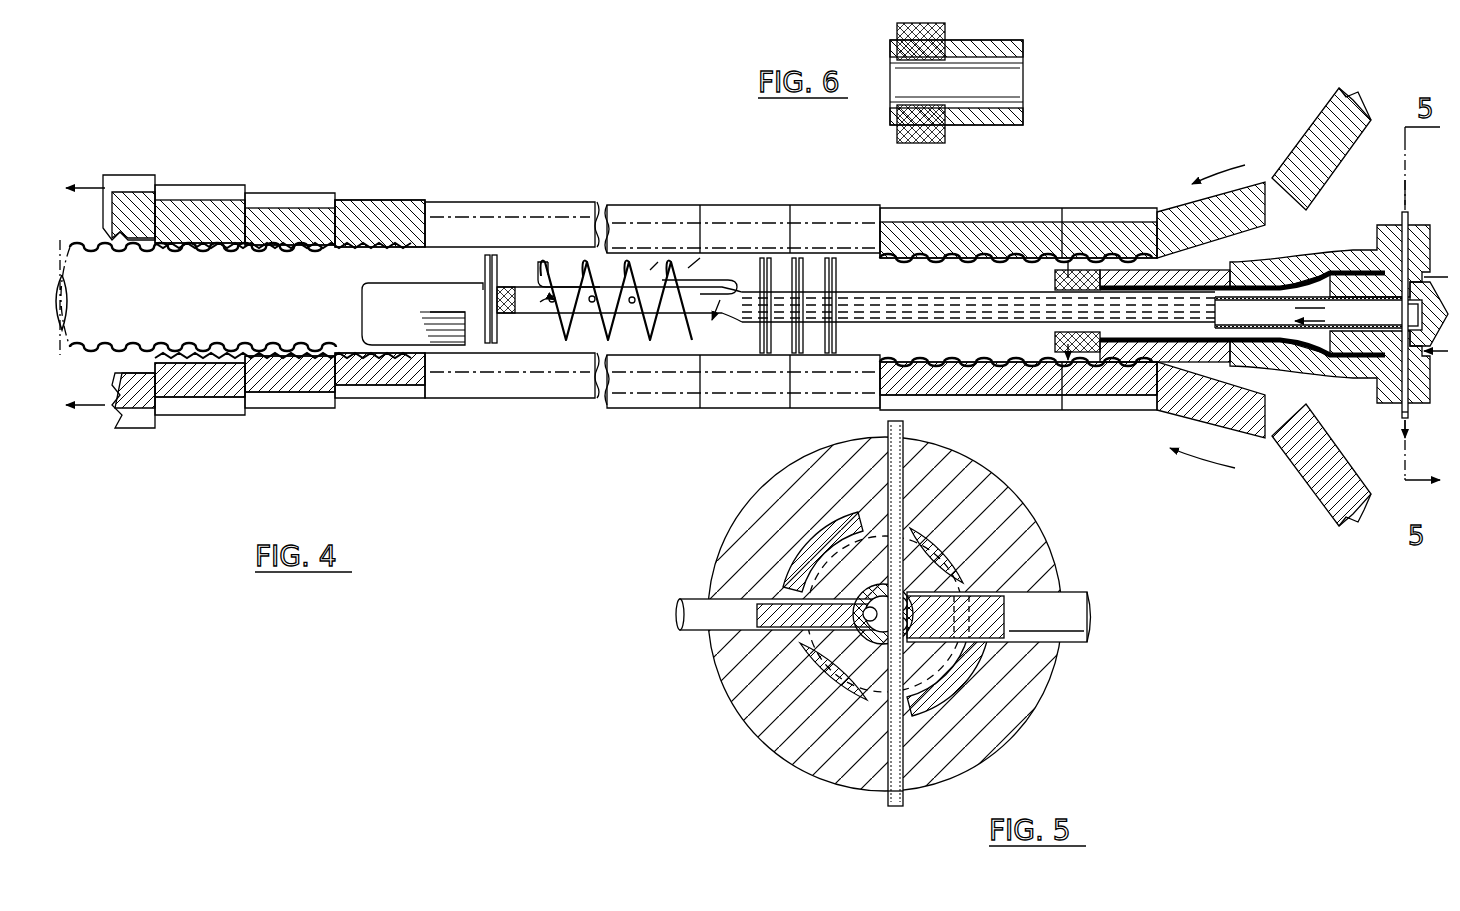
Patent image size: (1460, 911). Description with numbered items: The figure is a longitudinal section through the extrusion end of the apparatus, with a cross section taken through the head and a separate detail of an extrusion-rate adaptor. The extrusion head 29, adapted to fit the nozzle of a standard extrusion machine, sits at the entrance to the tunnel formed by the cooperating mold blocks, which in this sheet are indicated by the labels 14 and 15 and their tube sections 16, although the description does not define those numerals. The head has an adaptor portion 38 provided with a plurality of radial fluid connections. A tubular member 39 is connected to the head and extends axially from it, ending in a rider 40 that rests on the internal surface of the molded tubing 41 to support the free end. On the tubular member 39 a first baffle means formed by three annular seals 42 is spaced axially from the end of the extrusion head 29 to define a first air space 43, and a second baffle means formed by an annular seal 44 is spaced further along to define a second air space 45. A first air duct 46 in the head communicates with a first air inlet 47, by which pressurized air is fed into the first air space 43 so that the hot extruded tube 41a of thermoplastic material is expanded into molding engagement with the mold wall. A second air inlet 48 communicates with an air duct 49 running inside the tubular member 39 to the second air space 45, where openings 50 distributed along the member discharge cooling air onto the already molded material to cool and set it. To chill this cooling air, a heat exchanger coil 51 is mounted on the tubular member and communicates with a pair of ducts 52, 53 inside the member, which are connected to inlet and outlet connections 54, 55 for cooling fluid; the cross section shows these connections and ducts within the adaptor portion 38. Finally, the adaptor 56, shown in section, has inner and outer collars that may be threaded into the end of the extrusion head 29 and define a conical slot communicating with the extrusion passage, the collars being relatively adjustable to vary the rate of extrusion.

In FIG. 4, the first tubular member 14 is at (205, 163).
In FIG. 4, the second tubular member 15 is at (200, 478).
In FIG. 4, the tube section 16 is at (556, 217).
In FIG. 4, the extrusion head 29 is at (1310, 370).
In FIG. 6, the extrusion head 29 is at (905, 88).
In FIG. 4, the adaptor portion 38 is at (1367, 388).
In FIG. 5, the adaptor portion 38 is at (1030, 508).
In FIG. 4, the tubular member 39 is at (668, 298).
In FIG. 4, the rider 40 is at (410, 370).
In FIG. 4, the molded tubing 41 is at (248, 346).
In FIG. 4, the hot extruded tube 41a is at (1042, 362).
In FIG. 4, the annular seals 42 is at (778, 340).
In FIG. 4, the first air space 43 is at (992, 270).
In FIG. 4, the annular seal 44 is at (486, 268).
In FIG. 4, the second air space 45 is at (522, 340).
In FIG. 4, the first air duct 46 is at (1195, 285).
In FIG. 5, the first air duct 46 is at (915, 622).
In FIG. 5, the first air inlet 47 is at (1075, 628).
In FIG. 5, the second air inlet 48 is at (700, 612).
In FIG. 4, the air duct 49 is at (1142, 362).
In FIG. 5, the air duct 49 is at (800, 640).
In FIG. 4, the openings 50 is at (608, 320).
In FIG. 4, the heat exchanger coil 51 is at (623, 270).
In FIG. 4, the duct 52 is at (873, 300).
In FIG. 4, the duct 53 is at (930, 305).
In FIG. 4, the inlet connection 54 is at (1402, 214).
In FIG. 5, the inlet connection 54 is at (901, 428).
In FIG. 4, the outlet connection 55 is at (1402, 425).
In FIG. 5, the outlet connection 55 is at (885, 798).
In FIG. 6, the adaptor 56 is at (897, 47).